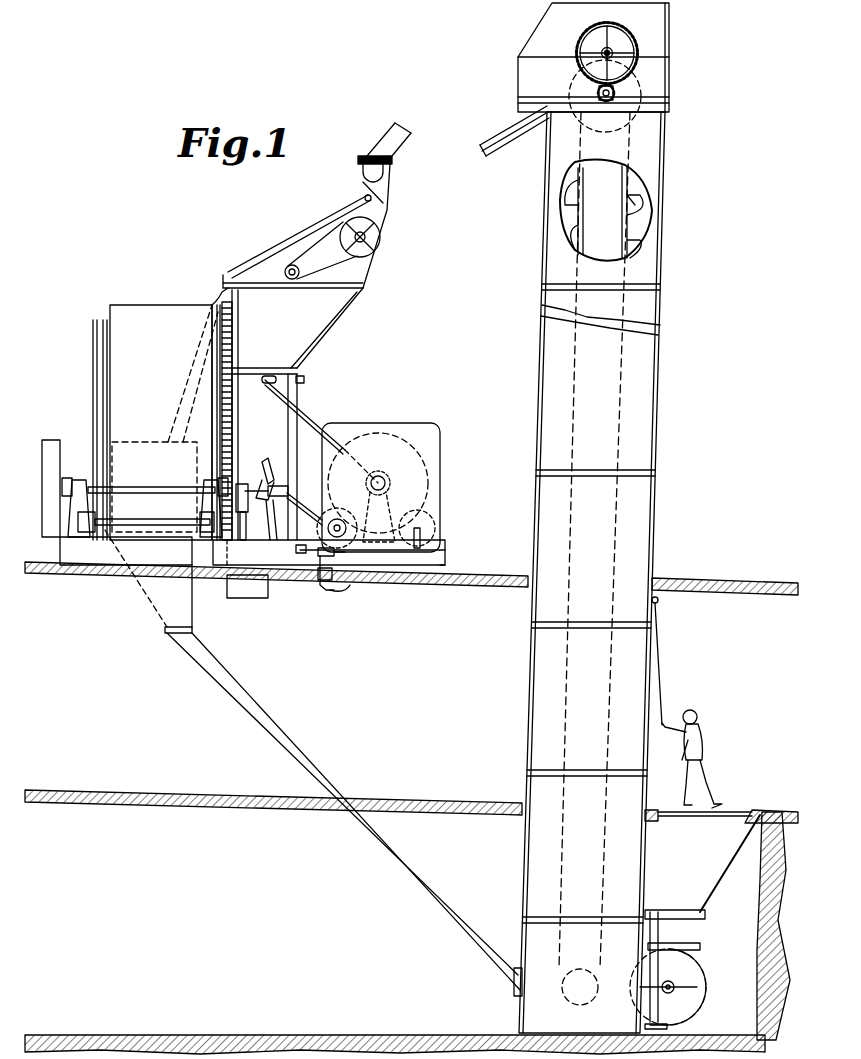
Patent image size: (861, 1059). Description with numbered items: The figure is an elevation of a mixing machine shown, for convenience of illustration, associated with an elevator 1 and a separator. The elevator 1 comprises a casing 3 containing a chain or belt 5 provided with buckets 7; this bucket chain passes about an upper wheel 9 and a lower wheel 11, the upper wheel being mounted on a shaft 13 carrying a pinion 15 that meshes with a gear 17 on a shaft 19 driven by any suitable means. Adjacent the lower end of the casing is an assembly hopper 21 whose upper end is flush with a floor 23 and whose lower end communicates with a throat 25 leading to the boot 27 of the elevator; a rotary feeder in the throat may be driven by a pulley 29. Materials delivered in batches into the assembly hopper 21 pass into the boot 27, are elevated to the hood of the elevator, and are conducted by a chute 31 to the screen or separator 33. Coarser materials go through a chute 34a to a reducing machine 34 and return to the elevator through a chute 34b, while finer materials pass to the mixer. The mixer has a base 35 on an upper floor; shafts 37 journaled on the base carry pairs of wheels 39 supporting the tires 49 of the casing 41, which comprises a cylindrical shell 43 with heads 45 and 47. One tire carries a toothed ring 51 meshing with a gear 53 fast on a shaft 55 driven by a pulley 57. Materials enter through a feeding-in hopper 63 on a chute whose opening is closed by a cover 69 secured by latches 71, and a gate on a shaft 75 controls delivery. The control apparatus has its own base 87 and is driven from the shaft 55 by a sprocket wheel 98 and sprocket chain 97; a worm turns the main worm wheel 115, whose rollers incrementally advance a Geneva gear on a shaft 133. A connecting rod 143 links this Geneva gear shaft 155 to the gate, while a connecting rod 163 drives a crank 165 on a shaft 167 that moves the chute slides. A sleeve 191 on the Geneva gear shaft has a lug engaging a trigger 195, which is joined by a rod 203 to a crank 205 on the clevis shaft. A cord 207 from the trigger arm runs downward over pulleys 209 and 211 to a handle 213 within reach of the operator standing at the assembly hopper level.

The elevator 1 is at (660, 450).
The casing 3 is at (655, 532).
The chain or belt 5 is at (628, 230).
The buckets 7 is at (634, 204).
The upper wheel 9 is at (655, 82).
The lower wheel 11 is at (595, 1002).
The shaft 13 is at (599, 92).
The pinion 15 is at (614, 90).
The gear 17 is at (640, 52).
The shaft 19 is at (613, 49).
The assembly hopper 21 is at (710, 881).
The floor 23 is at (776, 809).
The throat 25 is at (685, 972).
The boot 27 is at (516, 988).
The pulley 29 is at (527, 33).
The chute 31 is at (480, 130).
The screen or separator 33 is at (385, 220).
The reducing machine 34 is at (146, 443).
The chute 34a is at (160, 625).
The chute 34b is at (246, 710).
The base 35 is at (132, 580).
The shafts 37 is at (160, 519).
The wheels 39 is at (97, 540).
The casing 41 is at (92, 390).
The cylindrical shell 43 is at (118, 350).
The head 45 is at (108, 308).
The head 47 is at (212, 303).
The tires 49 is at (217, 303).
The toothed ring 51 is at (233, 343).
The gear 53 is at (215, 480).
The shaft 55 is at (150, 487).
The pulley 57 is at (51, 440).
The feeding-in hopper 63 is at (322, 346).
The cover 69 is at (288, 470).
The latches 71 is at (300, 385).
The shaft 75 is at (272, 368).
The base 87 is at (381, 590).
The sprocket chain 97 is at (276, 512).
The sprocket wheel 98 is at (290, 488).
The worm wheel 115 is at (432, 460).
The shaft 133 is at (430, 528).
The connecting rod 143 is at (300, 423).
The Geneva gear shaft 155 is at (376, 535).
The connecting rod 163 is at (290, 506).
The crank 165 is at (262, 480).
The shaft 167 is at (265, 460).
The sleeve 191 is at (340, 519).
The trigger 195 is at (346, 582).
The rod 203 is at (334, 553).
The crank 205 is at (294, 556).
The cord 207 is at (472, 592).
The pulley 209 is at (312, 583).
The pulley 211 is at (660, 600).
The handle 213 is at (665, 726).